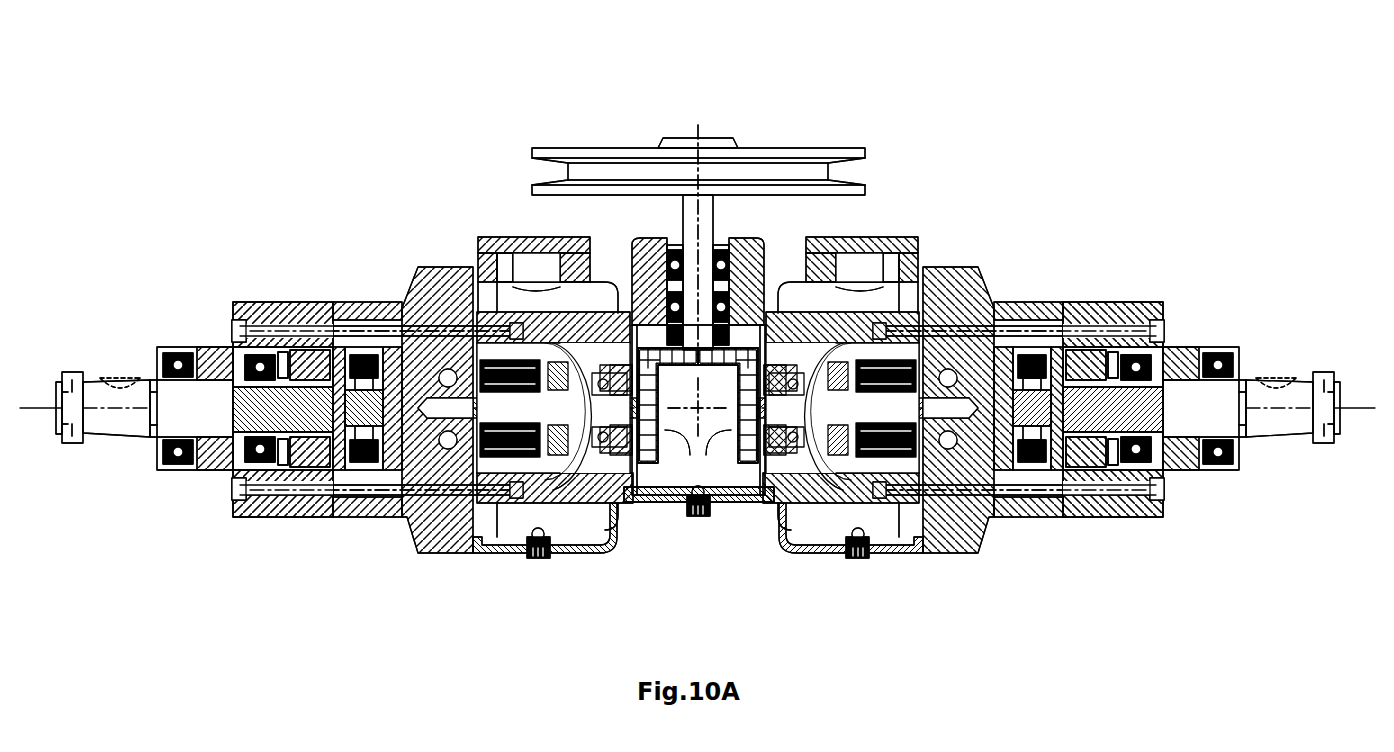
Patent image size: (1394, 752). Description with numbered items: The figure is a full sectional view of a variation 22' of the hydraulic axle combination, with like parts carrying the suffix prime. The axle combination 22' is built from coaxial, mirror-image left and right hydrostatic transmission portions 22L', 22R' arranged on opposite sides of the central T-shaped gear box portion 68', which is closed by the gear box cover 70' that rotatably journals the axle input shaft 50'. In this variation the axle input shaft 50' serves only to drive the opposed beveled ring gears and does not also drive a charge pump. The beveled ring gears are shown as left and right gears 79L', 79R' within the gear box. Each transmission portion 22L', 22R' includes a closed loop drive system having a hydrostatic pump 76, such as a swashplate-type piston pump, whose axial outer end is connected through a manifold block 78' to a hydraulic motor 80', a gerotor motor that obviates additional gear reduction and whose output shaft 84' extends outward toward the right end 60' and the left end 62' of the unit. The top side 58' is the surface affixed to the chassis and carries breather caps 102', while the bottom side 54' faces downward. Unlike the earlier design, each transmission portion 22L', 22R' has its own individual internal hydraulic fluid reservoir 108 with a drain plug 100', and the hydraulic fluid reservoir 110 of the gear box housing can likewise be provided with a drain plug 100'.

The hydraulic axle combination variation 22' is at (697, 299).
The right hydrostatic transmission portion 22R' is at (317, 339).
The left hydrostatic transmission portion 22L' is at (1079, 332).
The axle input shaft 50' is at (698, 213).
The bottom side 54' is at (708, 471).
The top side 58' is at (641, 274).
The first or right end 60' is at (258, 372).
The second or left end 62' is at (1157, 384).
The T-shaped gear box portion 68' is at (730, 275).
The gear box cover 70' is at (768, 274).
The hydrostatic pump 76 is at (556, 328).
The manifold block 78' is at (707, 442).
The left gear half 79L' is at (668, 420).
The right gear half 79R' is at (730, 420).
The hydraulic motor 80' is at (698, 335).
The output shaft 84' is at (699, 406).
The drain plug 100' is at (712, 570).
The breather cap 102' is at (723, 181).
The internal hydraulic fluid reservoir 108 is at (513, 522).
The hydraulic fluid reservoir of gear box housing 110 is at (676, 505).